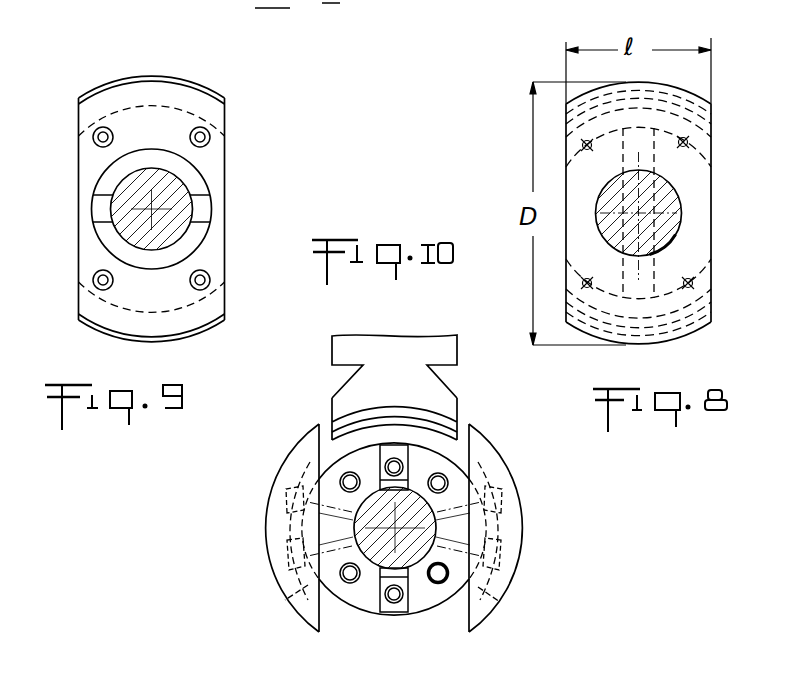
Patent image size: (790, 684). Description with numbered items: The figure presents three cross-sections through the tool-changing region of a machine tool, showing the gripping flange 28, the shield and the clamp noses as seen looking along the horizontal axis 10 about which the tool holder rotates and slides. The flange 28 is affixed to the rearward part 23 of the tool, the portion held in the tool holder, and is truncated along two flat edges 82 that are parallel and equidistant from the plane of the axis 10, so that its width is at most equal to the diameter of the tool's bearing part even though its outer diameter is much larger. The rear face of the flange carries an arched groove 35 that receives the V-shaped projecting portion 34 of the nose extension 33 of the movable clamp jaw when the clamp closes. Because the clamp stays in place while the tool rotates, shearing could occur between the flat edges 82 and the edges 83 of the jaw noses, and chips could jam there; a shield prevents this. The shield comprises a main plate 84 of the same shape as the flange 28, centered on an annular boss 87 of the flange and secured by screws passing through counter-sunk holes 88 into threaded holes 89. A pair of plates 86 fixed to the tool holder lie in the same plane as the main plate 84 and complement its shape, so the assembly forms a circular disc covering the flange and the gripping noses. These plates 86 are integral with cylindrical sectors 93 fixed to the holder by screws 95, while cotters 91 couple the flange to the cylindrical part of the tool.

In FIG. 9, the horizontal axis 10 is at (153, 207).
In FIG. 10, the horizontal axis 10 is at (395, 528).
In FIG. 8, the horizontal axis 10 is at (640, 214).
In FIG. 9, the rearward part 23 is at (130, 190).
In FIG. 8, the gripping flange 28 is at (697, 173).
In FIG. 10, the nose extension 33 is at (422, 385).
In FIG. 10, the V-shaped projecting portion 34 is at (423, 415).
In FIG. 8, the arched groove 35 is at (677, 88).
In FIG. 8, the edges 82 is at (567, 177).
In FIG. 10, the edges 83 is at (332, 400).
In FIG. 9, the main plate 84 is at (88, 162).
In FIG. 10, the plates 86 is at (268, 528).
In FIG. 9, the annular boss 87 is at (113, 243).
In FIG. 9, the counter-sunk holes 88 is at (93, 136).
In FIG. 8, the threaded holes 89 is at (698, 137).
In FIG. 9, the cotters 91 is at (93, 212).
In FIG. 10, the cylindrical sectors 93 is at (308, 585).
In FIG. 10, the screws 95 is at (290, 558).